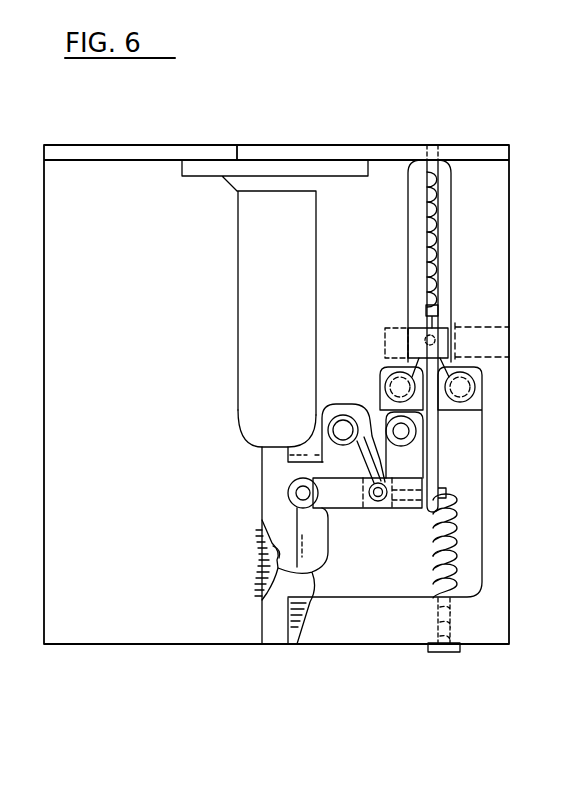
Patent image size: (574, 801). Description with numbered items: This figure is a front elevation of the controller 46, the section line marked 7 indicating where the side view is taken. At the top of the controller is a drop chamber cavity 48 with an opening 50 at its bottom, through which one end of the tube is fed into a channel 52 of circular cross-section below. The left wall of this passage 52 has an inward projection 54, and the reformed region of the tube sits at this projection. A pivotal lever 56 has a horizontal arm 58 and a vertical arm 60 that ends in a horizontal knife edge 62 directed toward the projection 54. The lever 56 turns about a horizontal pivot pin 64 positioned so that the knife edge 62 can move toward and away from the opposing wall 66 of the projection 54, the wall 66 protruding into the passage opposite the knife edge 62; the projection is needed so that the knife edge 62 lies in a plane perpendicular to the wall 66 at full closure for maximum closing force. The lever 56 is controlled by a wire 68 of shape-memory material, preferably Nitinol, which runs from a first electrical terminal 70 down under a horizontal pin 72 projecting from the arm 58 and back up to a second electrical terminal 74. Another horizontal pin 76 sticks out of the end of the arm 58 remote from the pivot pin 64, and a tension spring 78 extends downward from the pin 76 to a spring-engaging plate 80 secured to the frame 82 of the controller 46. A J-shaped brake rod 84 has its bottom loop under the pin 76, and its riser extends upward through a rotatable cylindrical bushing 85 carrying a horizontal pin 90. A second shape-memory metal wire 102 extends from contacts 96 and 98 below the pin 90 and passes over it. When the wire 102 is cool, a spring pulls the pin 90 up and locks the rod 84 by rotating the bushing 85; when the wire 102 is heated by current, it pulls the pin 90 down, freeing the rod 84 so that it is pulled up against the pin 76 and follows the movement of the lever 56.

The section line 7- 7 is at (447, 20).
The controller 46 is at (455, 76).
The drop chamber cavity 48 is at (287, 333).
The opening 50 is at (274, 442).
The channel 52 is at (275, 458).
The inward projection 54 is at (263, 579).
The pivotal lever 56 is at (316, 504).
The horizontal arm 58 is at (391, 508).
The vertical arm 60 is at (319, 559).
The knife edge 62 is at (292, 646).
The pivot pin 64 is at (300, 495).
The wall 66 is at (275, 551).
The wire 68 is at (333, 420).
The first electrical terminal 70 is at (327, 408).
The horizontal pin 72 is at (375, 488).
The second electrical terminal 74 is at (405, 432).
The horizontal pin 76 is at (442, 526).
The tension spring 78 is at (442, 570).
The spring-engaging plate 80 is at (455, 653).
The frame 82 is at (503, 640).
The brake rod 84 is at (437, 330).
The cylindrical bushing 85 is at (400, 333).
The horizontal pin 90 is at (429, 336).
The contact 96 is at (393, 383).
The contact 98 is at (463, 388).
The shape-memory metal wire 102 is at (450, 372).